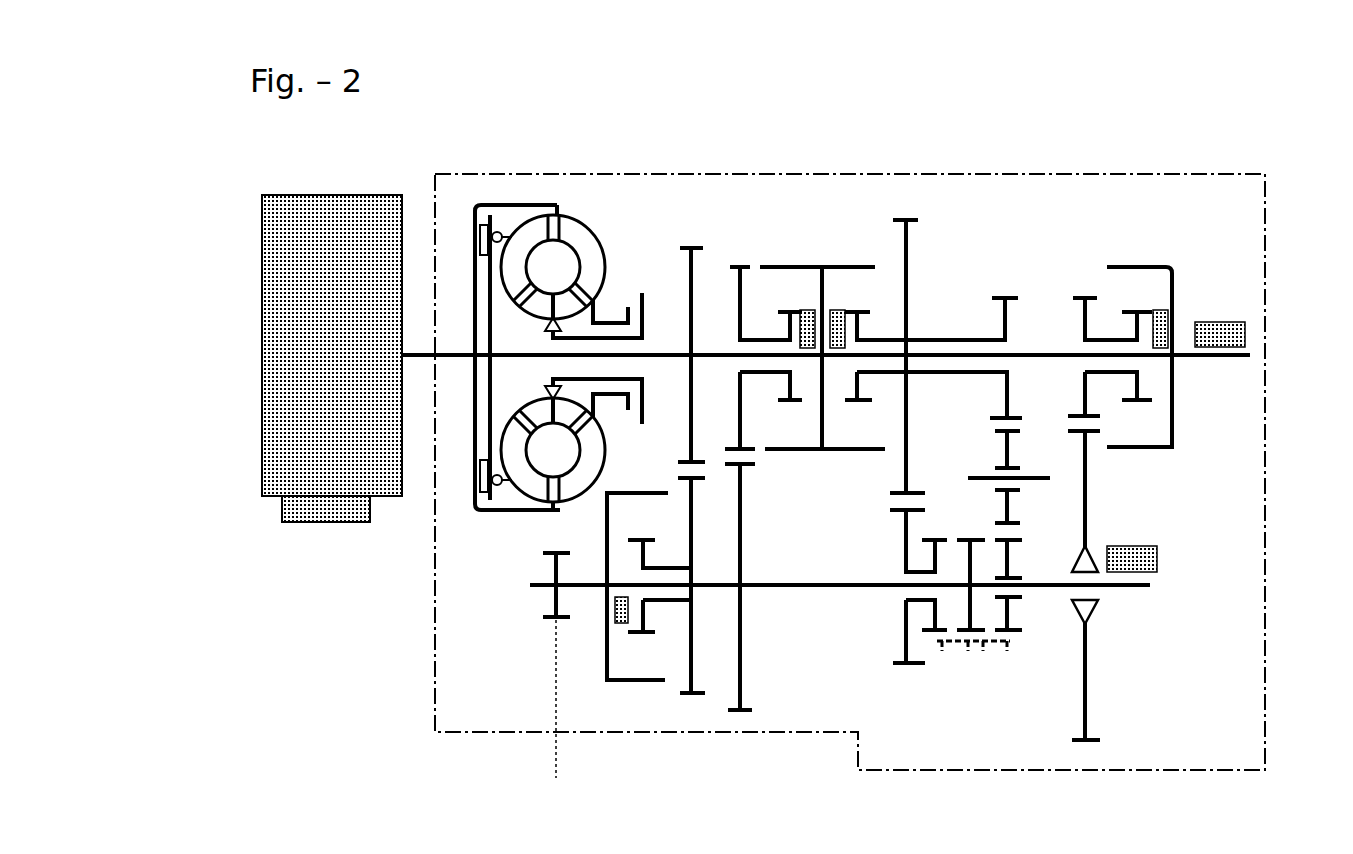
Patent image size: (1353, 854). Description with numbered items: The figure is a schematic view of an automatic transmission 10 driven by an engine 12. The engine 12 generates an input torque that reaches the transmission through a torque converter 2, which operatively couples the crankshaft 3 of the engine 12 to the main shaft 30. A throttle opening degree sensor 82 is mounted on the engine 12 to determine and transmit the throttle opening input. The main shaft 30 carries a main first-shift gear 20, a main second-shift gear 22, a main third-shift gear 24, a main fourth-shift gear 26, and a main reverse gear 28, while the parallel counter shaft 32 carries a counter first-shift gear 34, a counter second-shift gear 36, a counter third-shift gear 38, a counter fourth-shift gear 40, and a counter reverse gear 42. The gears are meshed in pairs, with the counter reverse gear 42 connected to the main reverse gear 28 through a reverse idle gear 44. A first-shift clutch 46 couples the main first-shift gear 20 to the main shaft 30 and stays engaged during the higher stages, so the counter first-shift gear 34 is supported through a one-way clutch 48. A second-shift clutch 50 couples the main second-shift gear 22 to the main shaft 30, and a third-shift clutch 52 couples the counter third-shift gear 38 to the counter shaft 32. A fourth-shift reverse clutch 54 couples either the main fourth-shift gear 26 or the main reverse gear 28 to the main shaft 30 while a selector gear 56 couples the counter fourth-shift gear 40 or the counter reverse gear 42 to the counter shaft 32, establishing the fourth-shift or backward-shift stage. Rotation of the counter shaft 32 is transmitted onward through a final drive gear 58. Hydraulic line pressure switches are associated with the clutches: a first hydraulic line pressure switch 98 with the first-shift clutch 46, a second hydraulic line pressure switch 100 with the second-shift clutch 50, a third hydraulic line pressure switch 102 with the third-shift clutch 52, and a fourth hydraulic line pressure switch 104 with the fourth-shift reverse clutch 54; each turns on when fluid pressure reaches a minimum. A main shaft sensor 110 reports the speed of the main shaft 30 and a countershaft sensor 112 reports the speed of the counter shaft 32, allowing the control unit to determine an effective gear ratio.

The torque converter 2 is at (557, 188).
The crankshaft 3 is at (418, 345).
The automatic transmission 10 is at (1032, 152).
The engine 12 is at (344, 273).
The main first-shift gear 20 is at (1080, 296).
The main second-shift gear 22 is at (738, 262).
The main third-shift gear 24 is at (685, 245).
The main fourth-shift gear 26 is at (907, 218).
The main reverse gear 28 is at (1000, 296).
The main shaft 30 is at (1212, 362).
The counter shaft 32 is at (1137, 590).
The counter first-shift gear 34 is at (1098, 742).
The counter second-shift gear 36 is at (748, 712).
The counter third-shift gear 38 is at (687, 697).
The counter fourth-shift gear 40 is at (903, 667).
The counter reverse gear 42 is at (1010, 640).
The reverse idle gear 44 is at (1012, 430).
The first-shift clutch 46 is at (1128, 265).
The one-way clutch 48 is at (1092, 612).
The second-shift clutch 50 is at (785, 265).
The third-shift clutch 52 is at (645, 684).
The fourth-shift reverse clutch 54 is at (852, 265).
The selector gear 56 is at (952, 652).
The final drive gear 58 is at (548, 620).
The throttle opening degree sensor 82 is at (318, 510).
The first hydraulic line pressure switch 98 is at (1160, 308).
The second hydraulic line pressure switch 100 is at (807, 308).
The third hydraulic line pressure switch 102 is at (616, 612).
The fourth hydraulic line pressure switch 104 is at (830, 352).
The main shaft sensor 110 is at (1218, 335).
The countershaft sensor 112 is at (1140, 565).